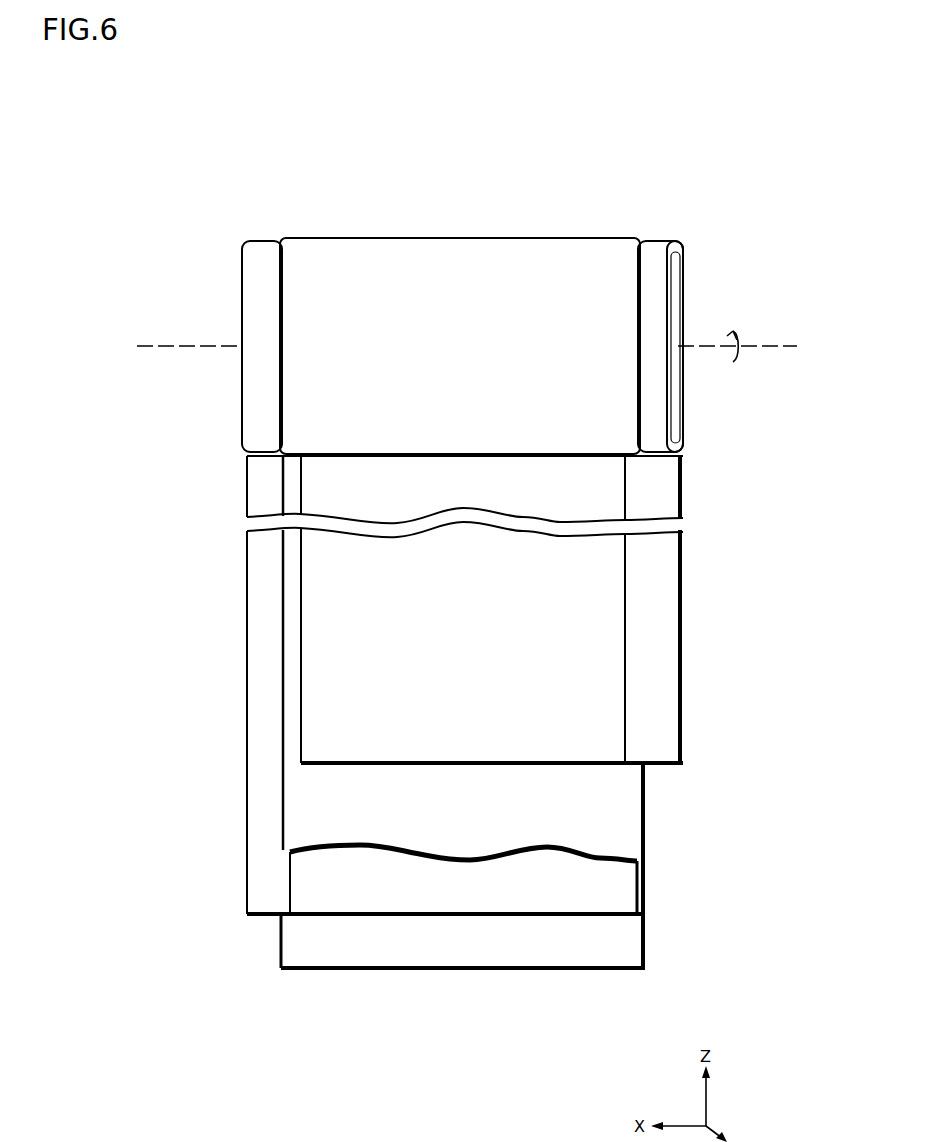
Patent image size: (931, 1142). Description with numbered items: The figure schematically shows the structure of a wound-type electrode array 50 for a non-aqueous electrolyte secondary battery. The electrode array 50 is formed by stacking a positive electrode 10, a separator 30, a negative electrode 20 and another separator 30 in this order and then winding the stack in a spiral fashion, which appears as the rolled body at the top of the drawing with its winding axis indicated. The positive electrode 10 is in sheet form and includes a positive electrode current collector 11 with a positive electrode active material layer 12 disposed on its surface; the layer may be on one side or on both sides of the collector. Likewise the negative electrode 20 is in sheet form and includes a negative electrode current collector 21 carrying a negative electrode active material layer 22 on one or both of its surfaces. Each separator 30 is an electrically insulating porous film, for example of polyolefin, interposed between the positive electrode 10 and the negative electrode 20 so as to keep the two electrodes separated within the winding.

The electrode array 50 is at (222, 191).
The positive electrode 10 is at (541, 609).
The positive electrode current collector 11 is at (663, 638).
The positive electrode active material layer 12 is at (617, 588).
The negative electrode 20 is at (357, 685).
The negative electrode current collector 21 is at (250, 808).
The negative electrode active material layer 22 is at (333, 895).
The separator 30 is at (280, 958).